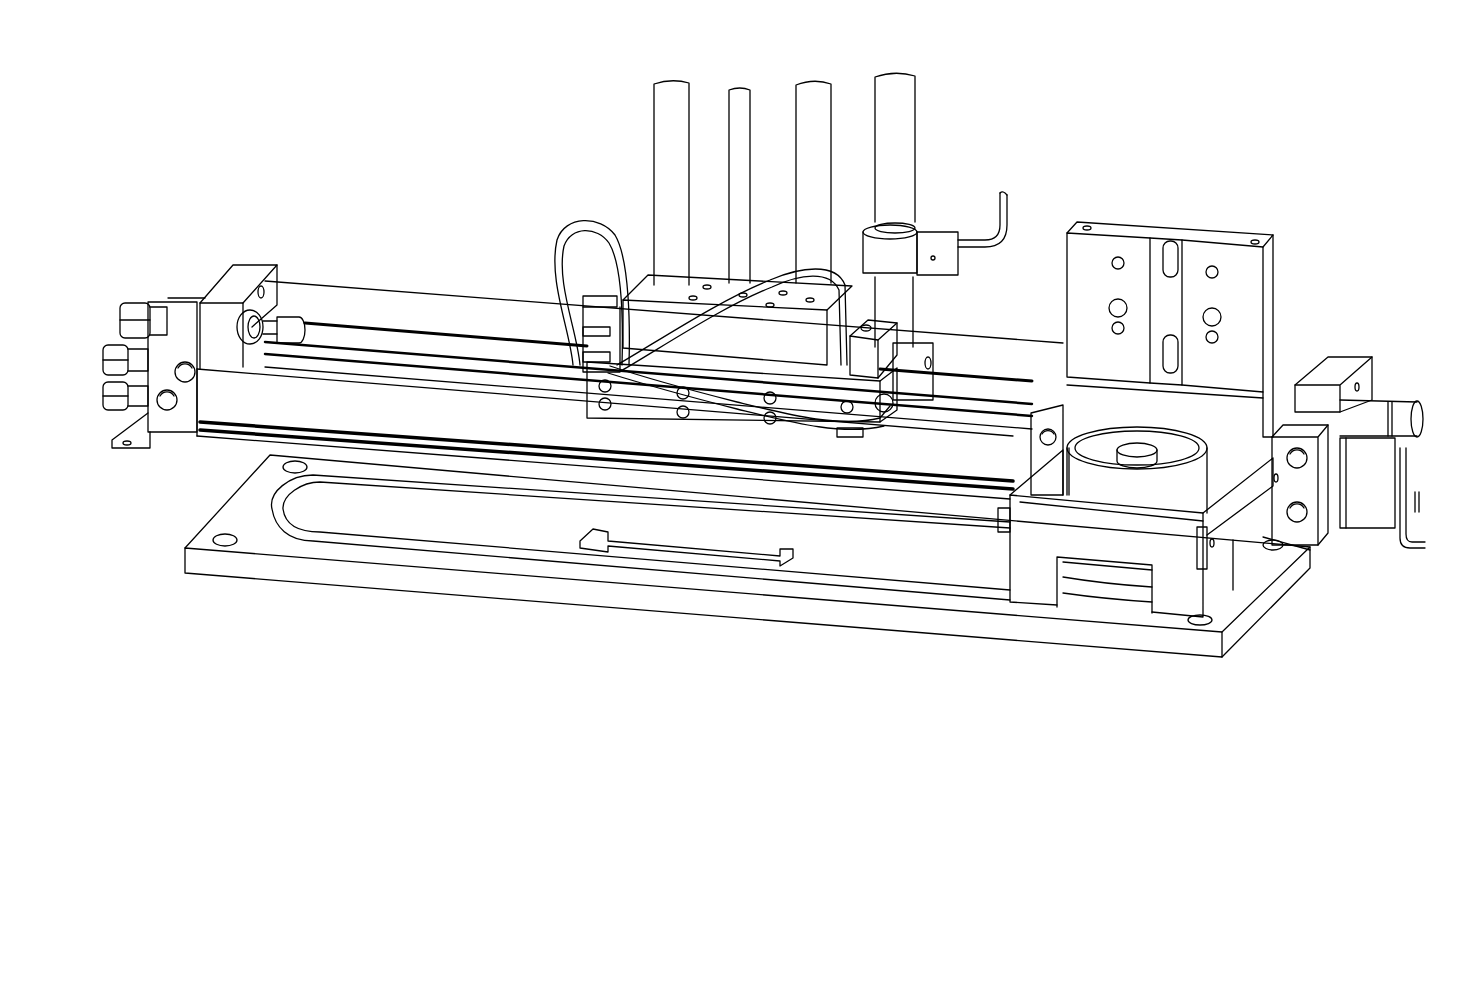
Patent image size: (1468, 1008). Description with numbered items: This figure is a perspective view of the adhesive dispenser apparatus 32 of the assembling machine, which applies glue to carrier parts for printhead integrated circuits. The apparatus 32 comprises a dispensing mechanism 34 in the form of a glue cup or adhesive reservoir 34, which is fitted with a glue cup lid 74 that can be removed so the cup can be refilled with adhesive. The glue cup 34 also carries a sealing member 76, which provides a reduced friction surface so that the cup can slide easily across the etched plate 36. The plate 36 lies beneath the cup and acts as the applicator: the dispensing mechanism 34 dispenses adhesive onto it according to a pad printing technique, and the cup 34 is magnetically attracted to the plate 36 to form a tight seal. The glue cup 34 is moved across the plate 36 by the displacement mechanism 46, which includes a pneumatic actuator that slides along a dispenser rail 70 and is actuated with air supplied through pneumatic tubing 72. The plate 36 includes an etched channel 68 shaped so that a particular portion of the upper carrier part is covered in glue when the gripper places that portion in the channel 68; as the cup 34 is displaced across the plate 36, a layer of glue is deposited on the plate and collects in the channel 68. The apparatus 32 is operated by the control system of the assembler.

The glue dispenser apparatus 32 is at (352, 630).
The dispensing mechanism 34 is at (1113, 577).
The etched plate 36 is at (550, 533).
The displacement mechanism 46 is at (1058, 438).
The etched channel 68 is at (688, 553).
The dispenser rail 70 is at (457, 350).
The pneumatic tubing 72 is at (680, 300).
The glue cup lid 74 is at (1170, 450).
The sealing member 76 is at (1088, 590).